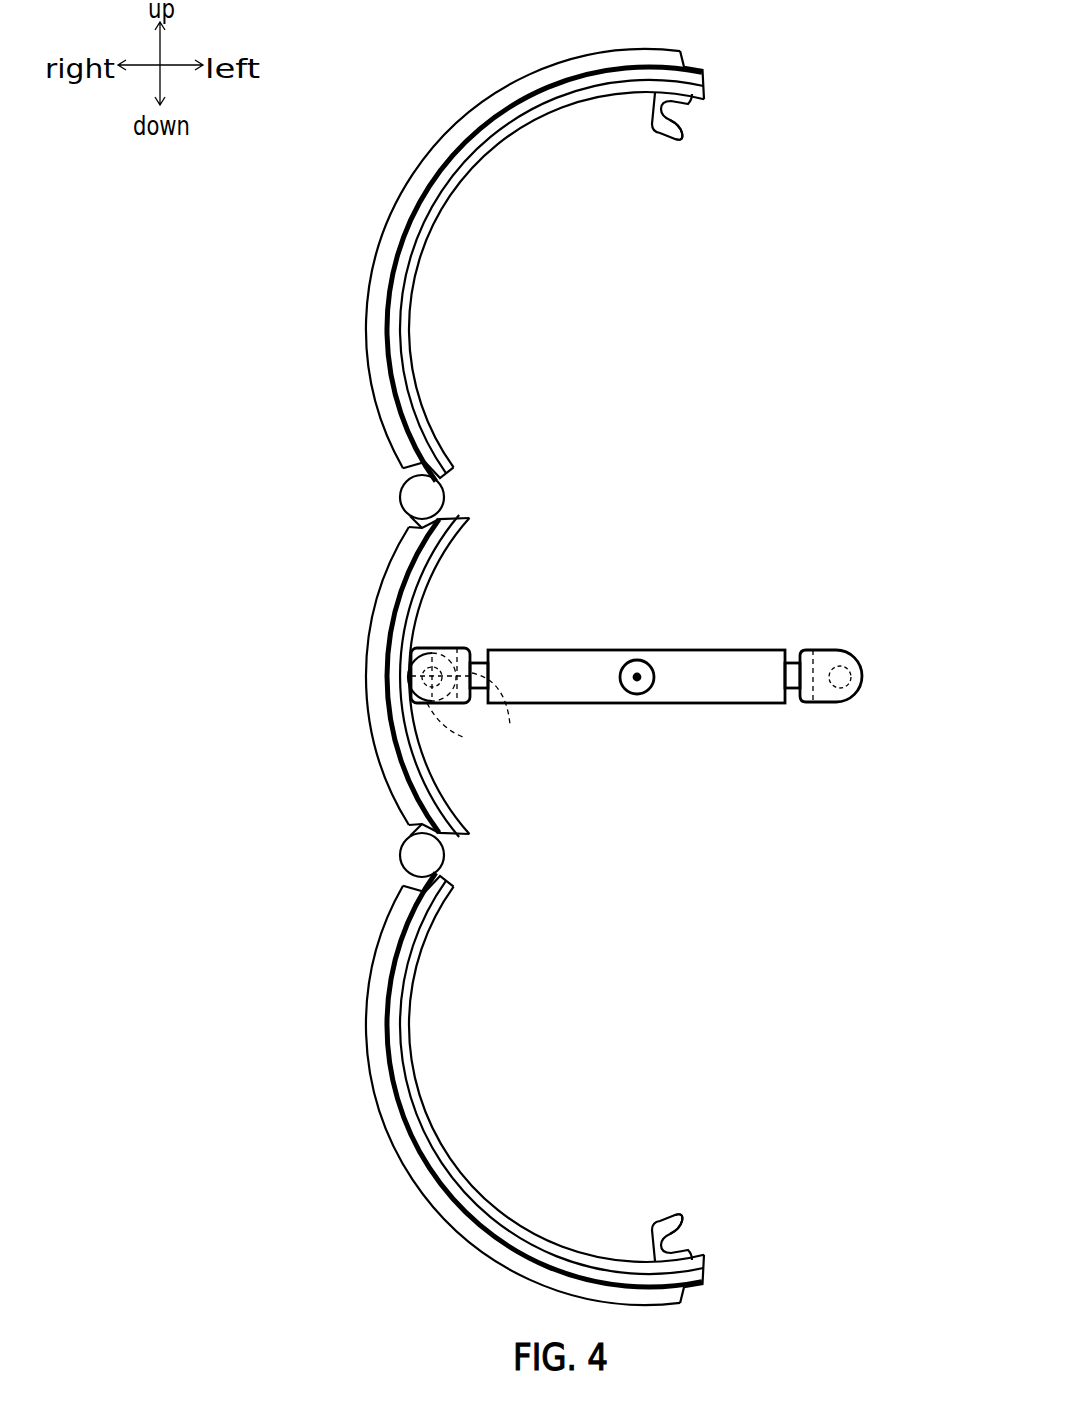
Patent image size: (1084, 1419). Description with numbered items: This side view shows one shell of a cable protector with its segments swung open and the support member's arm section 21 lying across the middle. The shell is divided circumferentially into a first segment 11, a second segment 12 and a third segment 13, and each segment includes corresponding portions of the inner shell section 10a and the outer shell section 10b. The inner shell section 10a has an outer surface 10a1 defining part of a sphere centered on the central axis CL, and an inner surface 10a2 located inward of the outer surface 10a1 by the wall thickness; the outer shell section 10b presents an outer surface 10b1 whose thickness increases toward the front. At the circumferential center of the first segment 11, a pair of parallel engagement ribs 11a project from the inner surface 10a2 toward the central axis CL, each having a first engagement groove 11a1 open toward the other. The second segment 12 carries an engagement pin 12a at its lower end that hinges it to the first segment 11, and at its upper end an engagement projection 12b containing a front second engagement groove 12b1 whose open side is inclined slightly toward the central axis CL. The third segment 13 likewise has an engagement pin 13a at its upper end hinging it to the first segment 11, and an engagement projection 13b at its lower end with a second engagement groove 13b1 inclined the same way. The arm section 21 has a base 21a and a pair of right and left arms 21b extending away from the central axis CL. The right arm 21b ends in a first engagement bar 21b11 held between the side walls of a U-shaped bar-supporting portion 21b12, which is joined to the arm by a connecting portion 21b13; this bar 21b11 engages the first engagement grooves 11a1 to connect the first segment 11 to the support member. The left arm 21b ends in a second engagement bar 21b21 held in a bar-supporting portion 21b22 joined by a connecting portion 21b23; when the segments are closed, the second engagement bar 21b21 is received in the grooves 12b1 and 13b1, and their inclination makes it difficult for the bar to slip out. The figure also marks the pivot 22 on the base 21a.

The inner shell section 10a is at (481, 664).
The outer surface of inner shell section 10a1 is at (463, 145).
The inner surface of inner shell section 10a2 is at (460, 172).
The outer shell section 10b is at (464, 276).
The outer surface of outer shell section 10b1 is at (417, 177).
The first segment 11 is at (380, 600).
The engagement ribs 11a is at (405, 700).
The first engagement grooves 11a1 is at (458, 744).
The second segment 12 is at (385, 212).
The engagement pin 12a is at (413, 497).
The engagement projection 12b is at (652, 125).
The front second engagement groove 12b1 is at (684, 132).
The third segment 13 is at (380, 975).
The engagement pin 13a is at (415, 858).
The engagement projection 13b is at (652, 1227).
The second engagement groove 13b1 is at (684, 1222).
The arm section 21 is at (683, 695).
The base 21a is at (637, 703).
The arms 21b is at (683, 670).
The first engagement bar 21b11 is at (510, 714).
The bar-supporting portion 21b12 is at (458, 648).
The connecting portion 21b13 is at (477, 650).
The second engagement bar 21b21 is at (848, 684).
The bar-supporting portion 21b22 is at (838, 650).
The connecting portion 21b23 is at (790, 660).
The center pin 22 is at (636, 676).
The central axis CL is at (637, 660).